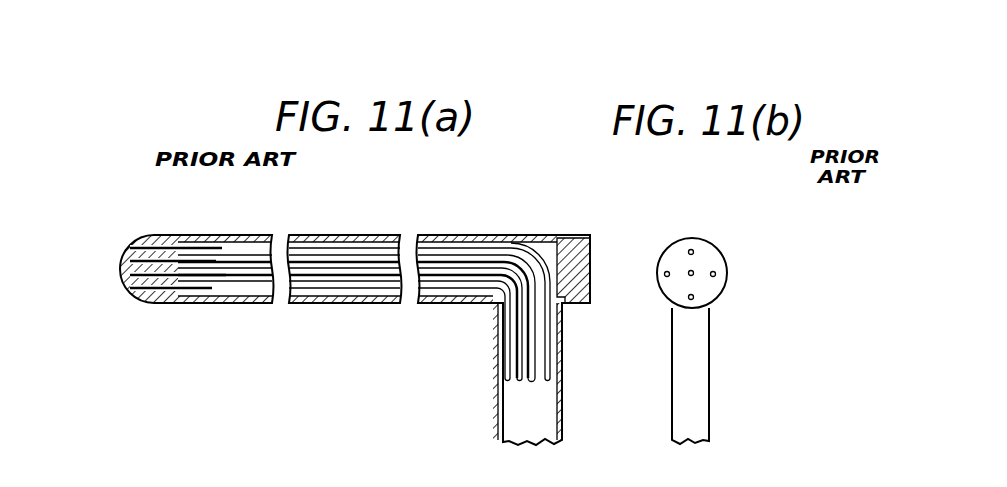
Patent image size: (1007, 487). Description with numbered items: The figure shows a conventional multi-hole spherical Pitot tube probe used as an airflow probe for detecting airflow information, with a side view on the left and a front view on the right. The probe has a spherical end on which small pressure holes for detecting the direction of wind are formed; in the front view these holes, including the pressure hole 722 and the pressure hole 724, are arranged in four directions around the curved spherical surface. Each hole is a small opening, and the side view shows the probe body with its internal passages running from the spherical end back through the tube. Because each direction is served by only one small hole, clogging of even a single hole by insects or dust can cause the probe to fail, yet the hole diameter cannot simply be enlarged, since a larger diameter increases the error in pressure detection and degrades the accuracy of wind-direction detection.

The pressure hole 722 is at (716, 274).
The pressure hole 724 is at (664, 272).